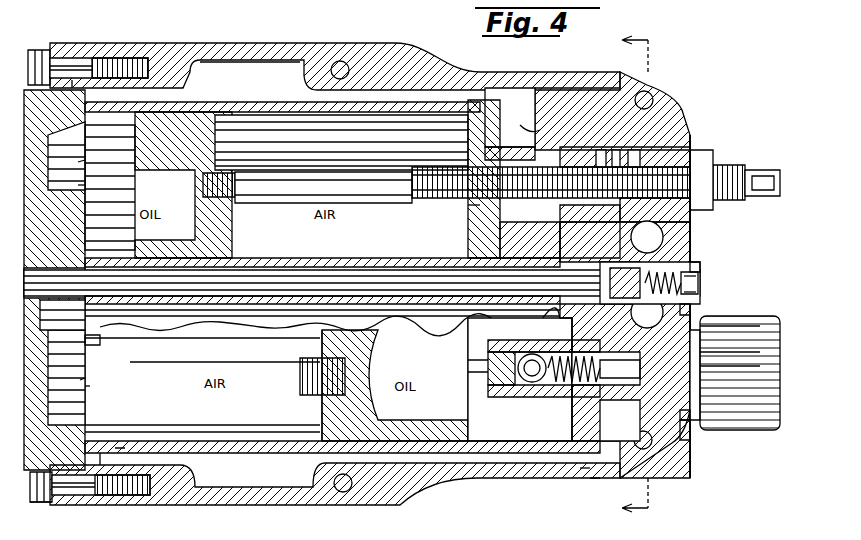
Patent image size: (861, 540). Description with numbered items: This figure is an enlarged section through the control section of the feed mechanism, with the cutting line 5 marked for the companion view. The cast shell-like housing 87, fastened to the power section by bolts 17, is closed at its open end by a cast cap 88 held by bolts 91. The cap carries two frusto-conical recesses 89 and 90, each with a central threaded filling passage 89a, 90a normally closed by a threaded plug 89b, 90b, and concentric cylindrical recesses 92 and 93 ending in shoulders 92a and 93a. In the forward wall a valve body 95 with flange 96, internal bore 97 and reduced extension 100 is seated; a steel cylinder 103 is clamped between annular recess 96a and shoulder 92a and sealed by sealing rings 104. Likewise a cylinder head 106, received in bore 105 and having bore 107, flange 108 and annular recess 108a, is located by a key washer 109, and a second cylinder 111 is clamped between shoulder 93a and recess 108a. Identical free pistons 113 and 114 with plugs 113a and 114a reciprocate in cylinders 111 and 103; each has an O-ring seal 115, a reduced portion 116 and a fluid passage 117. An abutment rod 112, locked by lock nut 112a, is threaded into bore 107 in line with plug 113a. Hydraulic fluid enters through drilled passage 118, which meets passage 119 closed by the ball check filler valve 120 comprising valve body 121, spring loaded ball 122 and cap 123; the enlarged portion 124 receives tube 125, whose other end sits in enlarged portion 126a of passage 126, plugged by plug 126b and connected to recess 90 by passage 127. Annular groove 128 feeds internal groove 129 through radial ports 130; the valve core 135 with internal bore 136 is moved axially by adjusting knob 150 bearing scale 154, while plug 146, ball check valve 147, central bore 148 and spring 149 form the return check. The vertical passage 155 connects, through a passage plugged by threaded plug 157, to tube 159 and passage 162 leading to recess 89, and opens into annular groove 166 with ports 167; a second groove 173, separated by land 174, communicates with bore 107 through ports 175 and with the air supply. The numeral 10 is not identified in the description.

The line 5— 5 is at (675, 508).
The valve seat 10 is at (562, 347).
The bolts 17 is at (341, 60).
The housing 87 is at (520, 480).
The cap 88 is at (58, 504).
The frusto-conical recess 89 is at (85, 400).
The threaded passage 89a is at (84, 380).
The threaded plug 89b is at (90, 386).
The frusto-conical recess 90 is at (134, 150).
The threaded passage 90a is at (80, 186).
The threaded plug 90b is at (80, 164).
The bolts 91 is at (62, 42).
The cylindrical recess 92 is at (112, 496).
The shoulder 92a is at (100, 496).
The cylindrical recess 93 is at (112, 58).
The shoulder 93a is at (72, 88).
The valve body 95 is at (688, 420).
The flange portion 96 is at (575, 402).
The annular recess 96a is at (585, 470).
The internal bore 97 is at (528, 384).
The reduced extension 100 is at (525, 73).
The cylindrical insert 103 is at (308, 443).
The sealing rings 104 is at (117, 444).
The bore 105 is at (672, 142).
The cylinder head 106 is at (700, 218).
The internal bore 107 is at (468, 212).
The flange portion 108 is at (468, 152).
The annular recess 108a is at (490, 88).
The key washer 109 is at (520, 126).
The cylindrical insert 111 is at (262, 101).
The abutment rod 112 is at (325, 172).
The lock nut 112a is at (713, 155).
The free piston 113 is at (300, 135).
The plug 113a is at (235, 175).
The free piston 114 is at (322, 345).
The plug 114a is at (322, 385).
The O-ring seal 115 is at (248, 260).
The reduced portion 116 is at (205, 102).
The fluid passage 117 is at (180, 152).
The drilled passage 118 is at (702, 330).
The drilled passage 119 is at (692, 310).
The ball check filler valve 120 is at (714, 288).
The valve body 121 is at (698, 268).
The spring loaded ball 122 is at (700, 296).
The cap 123 is at (700, 288).
The enlarged portion 124 is at (545, 340).
The tube 125 is at (120, 330).
The passage 126 is at (58, 330).
The enlarged portion 126a is at (125, 330).
The plug 126b is at (88, 352).
The drilled passage 127 is at (70, 268).
The annular groove 128 is at (684, 432).
The internal annular groove 129 is at (602, 404).
The radial ports 130 is at (622, 372).
The valve core 135 is at (702, 364).
The internal bore 136 is at (548, 390).
The plug 146 is at (468, 333).
The ball check valve 147 is at (505, 398).
The central bore 148 is at (488, 366).
The spring 149 is at (528, 340).
The adjusting knob 150 is at (752, 430).
The scale 154 is at (702, 355).
The drilled passage 155 is at (663, 240).
The threaded plug 157 is at (700, 262).
The tube 159 is at (500, 244).
The drilled passage 162 is at (88, 344).
The annular groove 166 is at (676, 115).
The ports 167 is at (632, 150).
The second annular groove 173 is at (612, 152).
The land 174 is at (601, 150).
The ports 175 is at (584, 252).